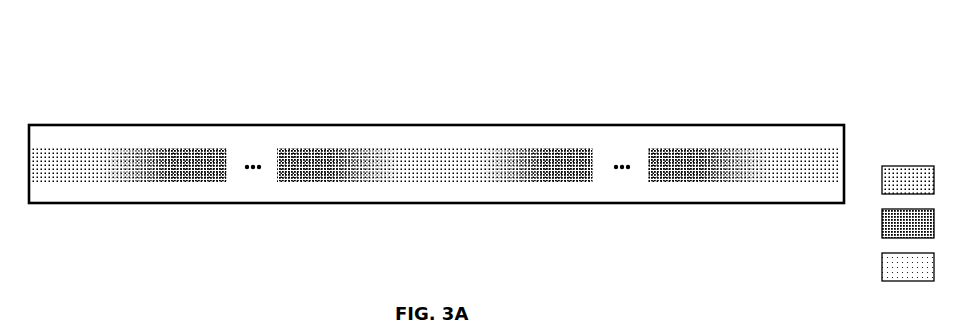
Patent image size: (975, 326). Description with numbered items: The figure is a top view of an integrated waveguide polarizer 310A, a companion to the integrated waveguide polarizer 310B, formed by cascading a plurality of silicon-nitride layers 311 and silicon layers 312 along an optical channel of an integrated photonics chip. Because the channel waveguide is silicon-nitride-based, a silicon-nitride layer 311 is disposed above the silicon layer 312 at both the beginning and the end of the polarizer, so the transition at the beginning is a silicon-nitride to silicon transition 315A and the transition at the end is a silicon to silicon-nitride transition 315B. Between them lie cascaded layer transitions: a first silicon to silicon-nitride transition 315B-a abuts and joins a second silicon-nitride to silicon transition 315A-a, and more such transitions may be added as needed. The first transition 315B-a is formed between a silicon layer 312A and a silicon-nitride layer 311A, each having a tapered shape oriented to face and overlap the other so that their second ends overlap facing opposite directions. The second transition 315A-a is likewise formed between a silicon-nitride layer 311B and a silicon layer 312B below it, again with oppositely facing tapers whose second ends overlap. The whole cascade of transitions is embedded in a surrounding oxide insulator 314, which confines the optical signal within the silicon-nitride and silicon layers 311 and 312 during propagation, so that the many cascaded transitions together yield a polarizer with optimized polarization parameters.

The integrated waveguide polarizer 310A is at (68, 61).
The integrated waveguide polarizer 310B is at (53, 324).
The silicon-nitride layer 311 is at (50, 157).
The silicon-nitride layer 311A is at (423, 150).
The silicon-nitride layer 311B is at (447, 153).
The silicon layer 312 is at (204, 153).
The silicon layer 312A is at (288, 150).
The silicon layer 312B is at (573, 155).
The oxide insulator 314 is at (623, 147).
The silicon-nitride to silicon transition 315A is at (177, 212).
The second silicon-nitride to silicon transition 315A-a is at (562, 212).
The silicon to silicon-nitride transition 315B is at (793, 212).
The first silicon to silicon-nitride transition 315B-a is at (418, 212).